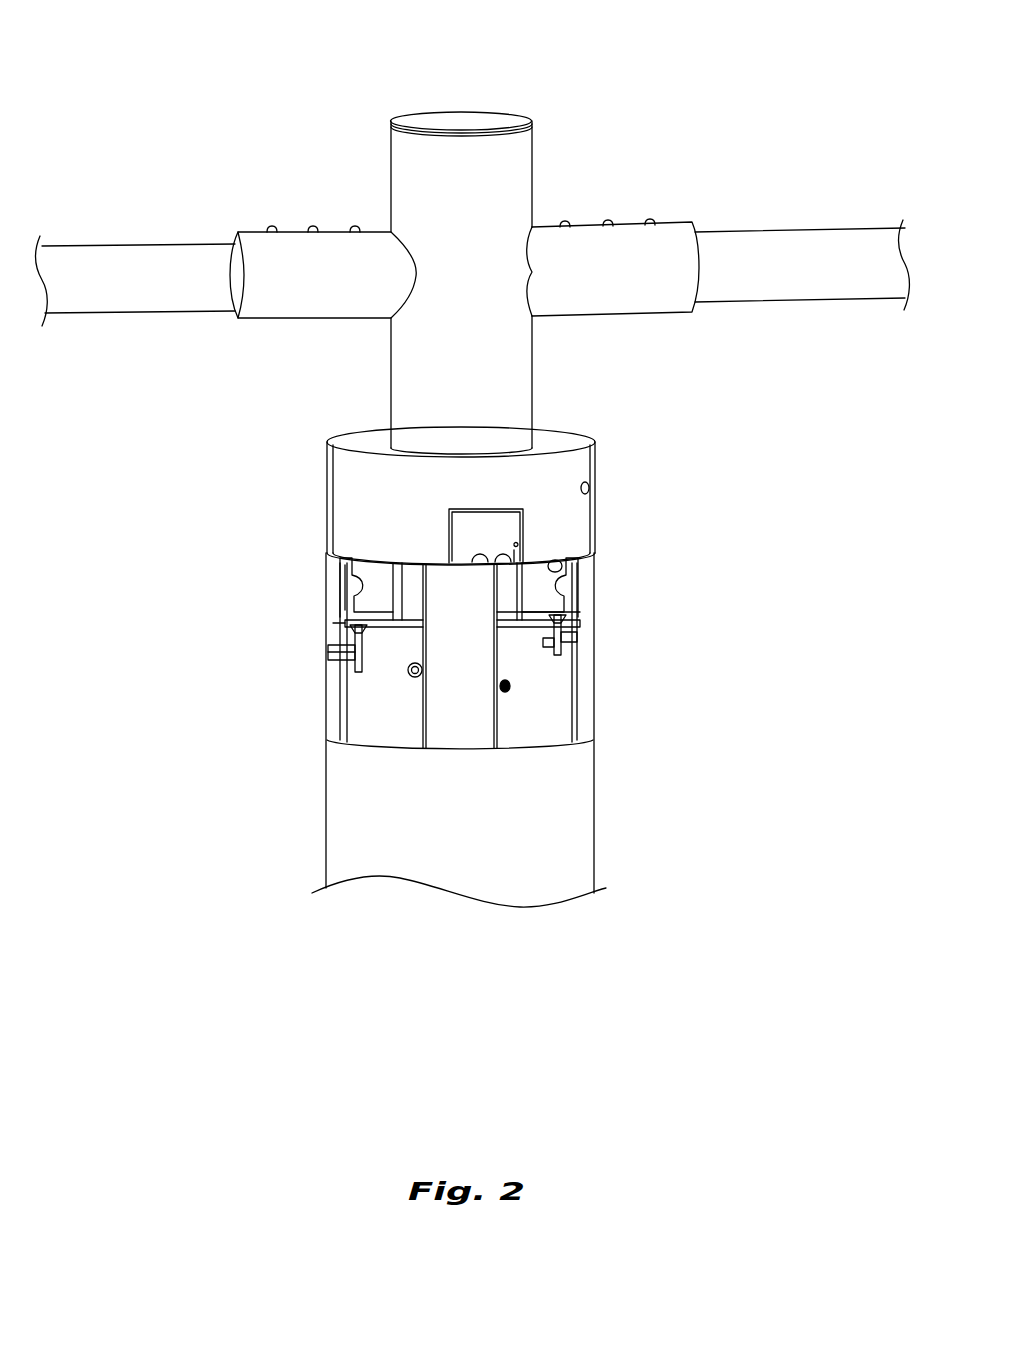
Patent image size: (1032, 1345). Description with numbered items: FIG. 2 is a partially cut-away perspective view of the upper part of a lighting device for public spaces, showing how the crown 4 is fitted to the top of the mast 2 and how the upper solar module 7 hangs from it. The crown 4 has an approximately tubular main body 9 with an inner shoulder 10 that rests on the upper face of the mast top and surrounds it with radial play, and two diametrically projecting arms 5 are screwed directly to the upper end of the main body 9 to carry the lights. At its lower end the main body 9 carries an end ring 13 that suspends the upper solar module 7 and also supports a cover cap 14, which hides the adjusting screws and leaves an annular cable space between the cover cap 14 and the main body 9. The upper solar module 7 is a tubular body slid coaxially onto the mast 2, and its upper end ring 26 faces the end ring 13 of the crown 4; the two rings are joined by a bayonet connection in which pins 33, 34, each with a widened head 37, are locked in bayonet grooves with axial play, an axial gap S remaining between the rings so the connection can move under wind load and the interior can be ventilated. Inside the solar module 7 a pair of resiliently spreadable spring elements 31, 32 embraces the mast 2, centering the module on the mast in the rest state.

The crown 4 is at (291, 108).
The projecting arm 5 is at (135, 262).
The cover cap 14 is at (365, 538).
The main body 9 is at (385, 578).
The inner shoulder 10 is at (535, 613).
The end ring 13 is at (343, 631).
The widened head 37 is at (560, 617).
The pin 33 is at (348, 648).
The pin 34 is at (558, 635).
The upper end ring 26 is at (330, 651).
The axial gap S is at (577, 637).
The spring element 31 is at (410, 676).
The spring element 32 is at (510, 686).
The mast 2 is at (485, 715).
The upper solar module 7 is at (343, 793).